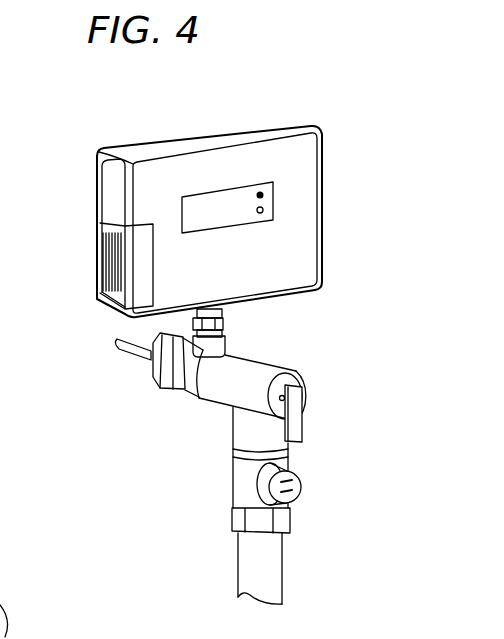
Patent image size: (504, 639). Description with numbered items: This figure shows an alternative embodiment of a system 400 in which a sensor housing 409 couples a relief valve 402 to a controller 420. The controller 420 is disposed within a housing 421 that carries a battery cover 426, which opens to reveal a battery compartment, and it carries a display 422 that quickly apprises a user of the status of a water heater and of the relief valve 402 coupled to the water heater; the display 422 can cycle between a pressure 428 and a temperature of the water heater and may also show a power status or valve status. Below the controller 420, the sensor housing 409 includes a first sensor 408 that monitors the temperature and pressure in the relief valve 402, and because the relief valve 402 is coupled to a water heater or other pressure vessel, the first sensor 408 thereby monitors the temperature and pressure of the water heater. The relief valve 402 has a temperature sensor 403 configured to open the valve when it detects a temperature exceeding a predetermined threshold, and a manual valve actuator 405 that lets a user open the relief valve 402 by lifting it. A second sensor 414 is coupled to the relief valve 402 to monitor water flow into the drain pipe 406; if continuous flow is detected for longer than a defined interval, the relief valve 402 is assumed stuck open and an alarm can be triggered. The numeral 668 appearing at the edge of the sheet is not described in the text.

The system 400 is at (306, 93).
The controller 420 is at (123, 138).
The housing 421 is at (103, 188).
The battery cover 426 is at (100, 266).
The display 422 is at (195, 207).
The pressure 428 is at (242, 210).
The first sensor 408 is at (231, 313).
The sensor housing 409 is at (241, 331).
The relief valve 402 is at (213, 408).
The temperature sensor 403 is at (129, 353).
The manual valve actuator 405 is at (300, 430).
The second sensor 414 is at (300, 488).
The drain pipe 406 is at (243, 557).
The reference element 668 is at (5, 636).